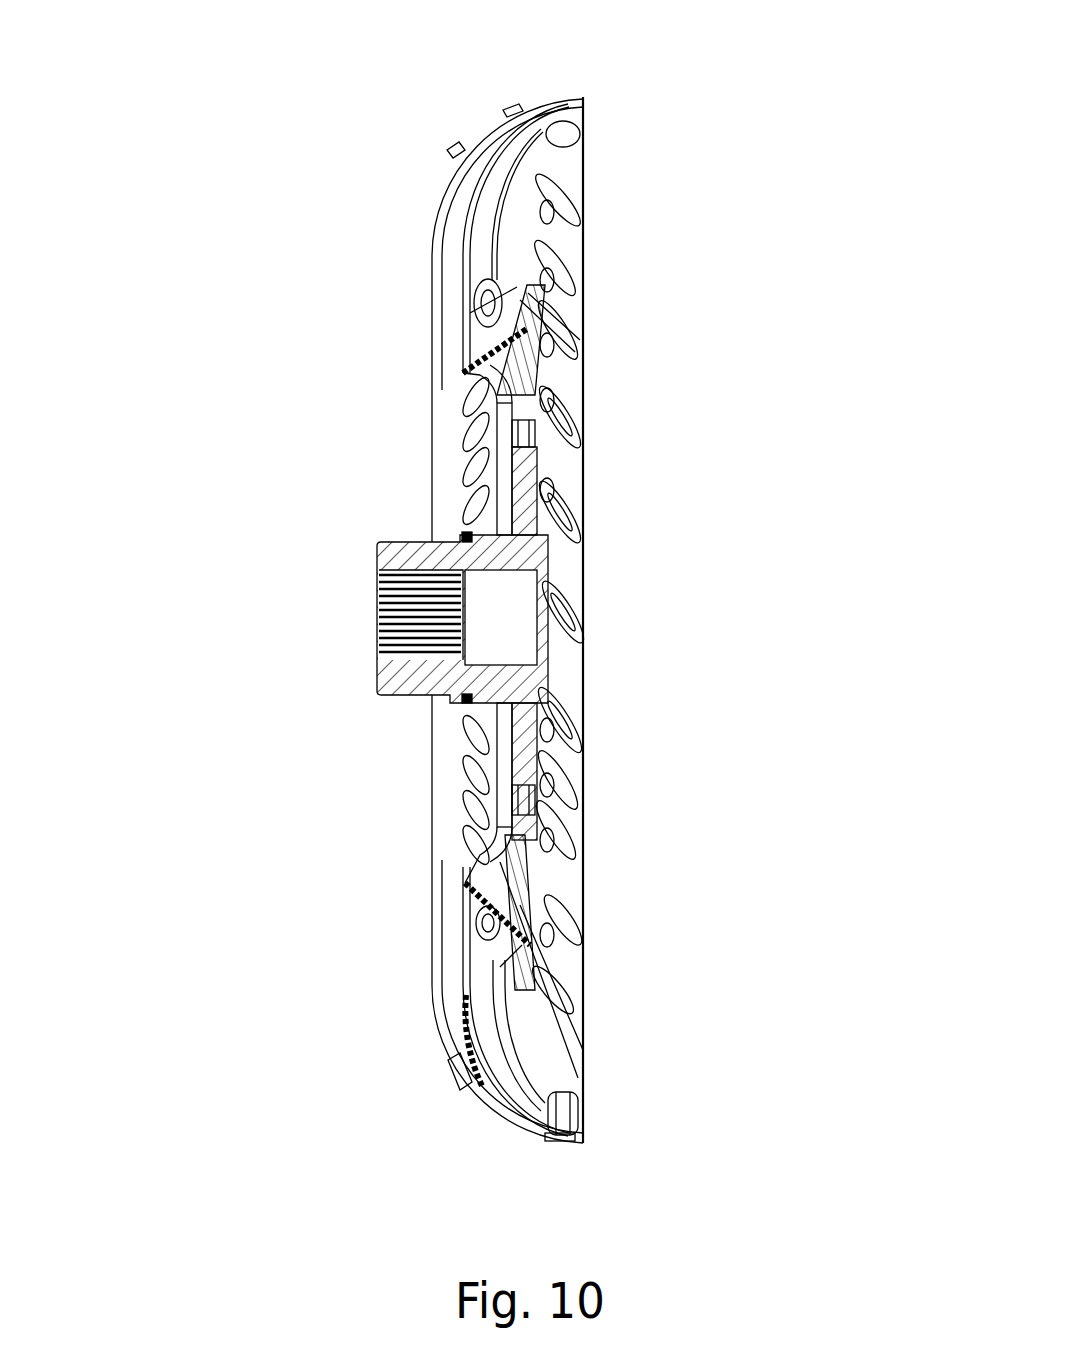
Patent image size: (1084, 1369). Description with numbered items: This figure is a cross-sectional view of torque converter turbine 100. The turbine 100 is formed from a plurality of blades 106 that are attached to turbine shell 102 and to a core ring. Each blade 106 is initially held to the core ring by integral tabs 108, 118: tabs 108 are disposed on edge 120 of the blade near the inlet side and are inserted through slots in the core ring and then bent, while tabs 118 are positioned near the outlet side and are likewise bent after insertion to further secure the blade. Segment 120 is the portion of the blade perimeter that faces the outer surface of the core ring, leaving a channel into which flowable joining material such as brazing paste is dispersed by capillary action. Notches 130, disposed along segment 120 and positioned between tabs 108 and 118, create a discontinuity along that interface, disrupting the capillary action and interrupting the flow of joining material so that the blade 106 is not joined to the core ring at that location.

The torque converter turbine 100 is at (342, 92).
The turbine shell 102 is at (433, 270).
The turbine blade 106 is at (480, 222).
The tab 108 is at (540, 980).
The tab 118 is at (552, 229).
The segment 120 is at (553, 247).
The notch 130 is at (520, 197).